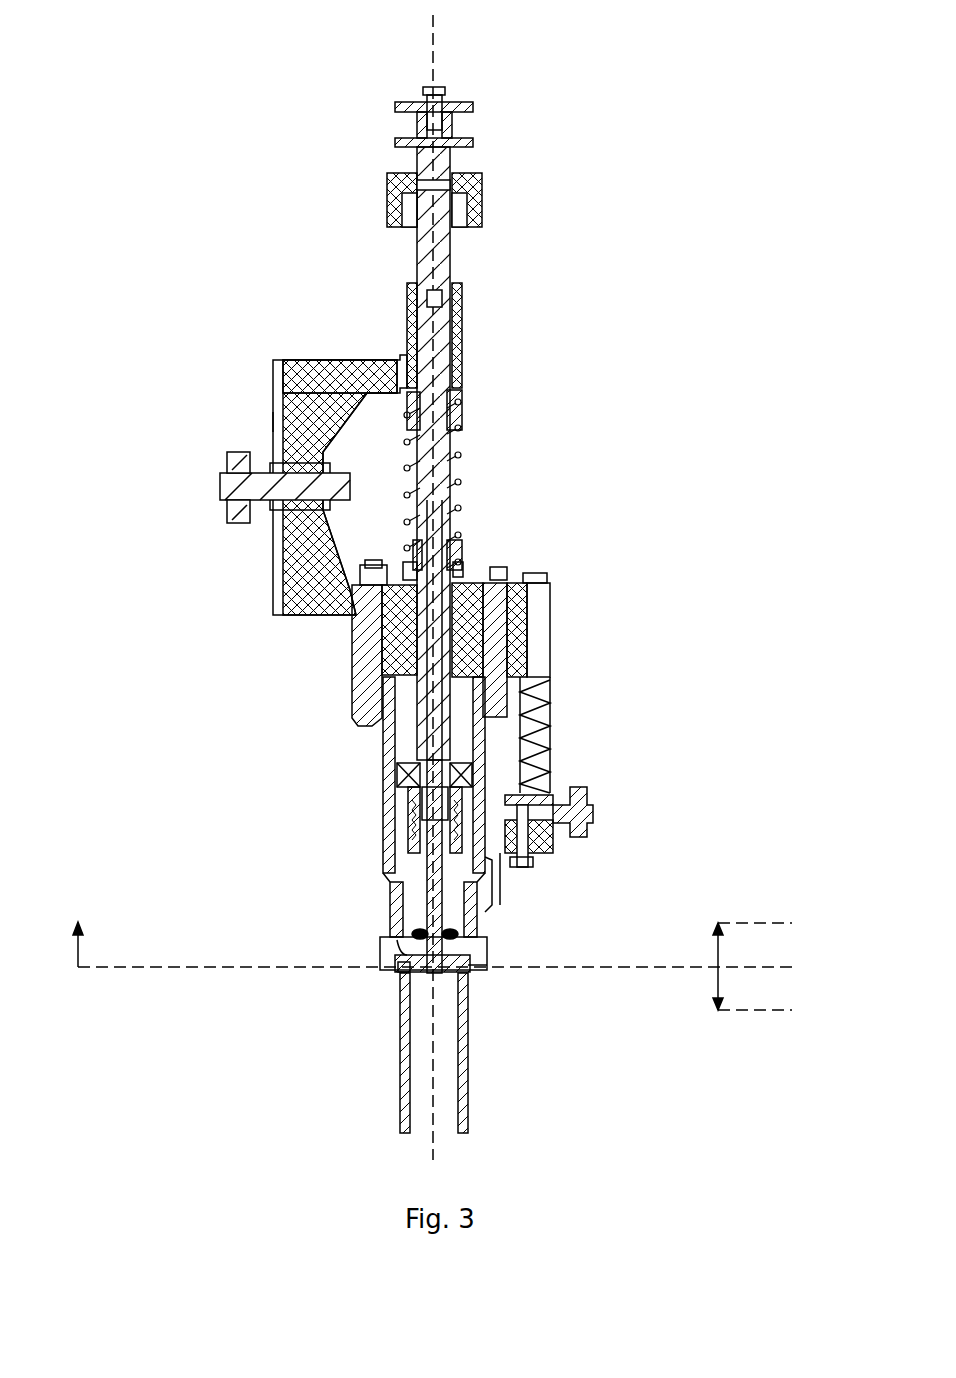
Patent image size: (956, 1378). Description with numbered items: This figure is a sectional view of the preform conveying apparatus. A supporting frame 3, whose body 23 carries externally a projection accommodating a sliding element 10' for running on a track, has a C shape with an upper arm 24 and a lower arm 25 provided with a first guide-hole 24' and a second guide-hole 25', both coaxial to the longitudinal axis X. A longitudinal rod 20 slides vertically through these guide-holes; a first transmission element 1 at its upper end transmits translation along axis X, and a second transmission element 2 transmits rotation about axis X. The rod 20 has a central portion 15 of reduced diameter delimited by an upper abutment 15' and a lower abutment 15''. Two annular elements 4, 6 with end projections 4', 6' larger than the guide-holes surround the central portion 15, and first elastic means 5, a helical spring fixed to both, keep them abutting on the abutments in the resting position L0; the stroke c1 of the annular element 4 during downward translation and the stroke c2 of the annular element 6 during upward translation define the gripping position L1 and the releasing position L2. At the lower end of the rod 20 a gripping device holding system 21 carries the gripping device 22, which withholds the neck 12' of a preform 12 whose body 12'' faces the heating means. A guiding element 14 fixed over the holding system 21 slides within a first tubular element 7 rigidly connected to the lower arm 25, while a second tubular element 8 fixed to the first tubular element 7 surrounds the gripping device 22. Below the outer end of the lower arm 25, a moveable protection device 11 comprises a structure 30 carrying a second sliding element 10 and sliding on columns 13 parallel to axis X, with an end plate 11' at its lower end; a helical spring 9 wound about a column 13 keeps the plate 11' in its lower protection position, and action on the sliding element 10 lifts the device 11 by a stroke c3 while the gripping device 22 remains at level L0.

The first transmission element 1 is at (398, 107).
The second transmission element 2 is at (388, 190).
The supporting frame 3 is at (297, 367).
The annular element 4 is at (494, 391).
The annular end projection 4' is at (281, 388).
The first elastic means 5 is at (460, 457).
The annular element 6 is at (516, 529).
The annular end projection 6' is at (308, 593).
The first tubular element 7 is at (383, 807).
The second tubular element 8 is at (395, 898).
The second elastic means 9 is at (550, 713).
The second sliding element 10 is at (612, 830).
The sliding element 10' is at (212, 499).
The moveable protection device 11 is at (531, 903).
The end plate 11' is at (497, 1029).
The preform 12 is at (435, 866).
The neck 12' is at (336, 951).
The body 12'' is at (364, 1053).
The column 13 is at (533, 747).
The guiding element 14 is at (390, 775).
The central portion 15 is at (494, 525).
The upper abutment 15' is at (514, 443).
The lower abutment 15'' is at (526, 555).
The longitudinal rod 20 is at (427, 257).
The gripping device holding system 21 is at (407, 828).
The gripping device 22 is at (402, 968).
The body 23 is at (283, 423).
The upper arm 24 is at (340, 341).
The first guide-hole 24' is at (485, 325).
The lower arm 25 is at (292, 655).
The second guide-hole 25' is at (291, 659).
The structure 30 is at (553, 847).
The longitudinal axis X is at (433, 52).
The first resting position L0 is at (452, 968).
The second gripping position L1 is at (772, 1011).
The third releasing position L2 is at (772, 924).
The stroke c1 is at (735, 988).
The stroke c2 is at (735, 945).
The stroke c3 is at (60, 944).